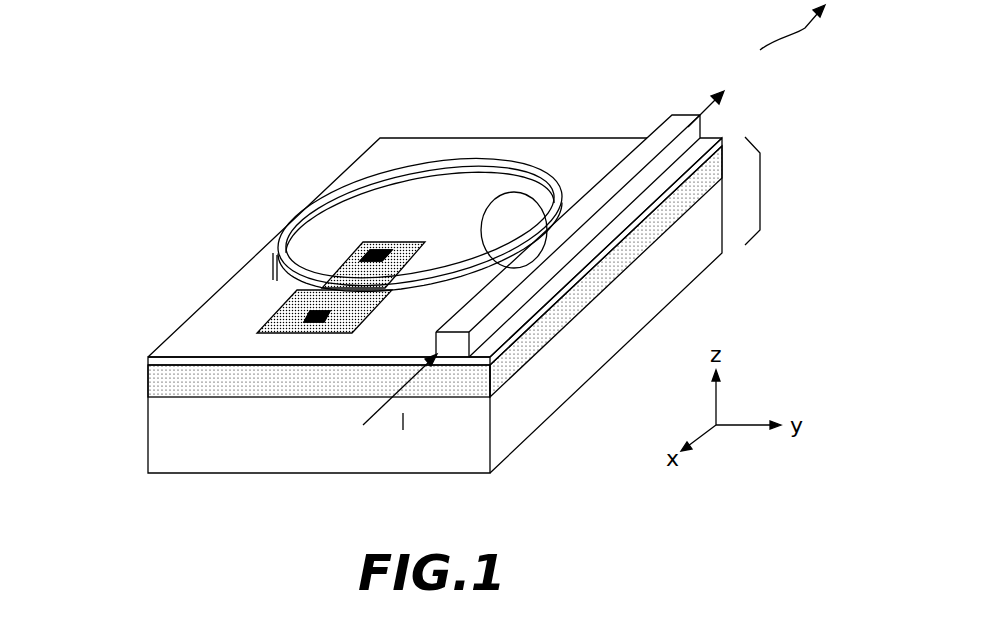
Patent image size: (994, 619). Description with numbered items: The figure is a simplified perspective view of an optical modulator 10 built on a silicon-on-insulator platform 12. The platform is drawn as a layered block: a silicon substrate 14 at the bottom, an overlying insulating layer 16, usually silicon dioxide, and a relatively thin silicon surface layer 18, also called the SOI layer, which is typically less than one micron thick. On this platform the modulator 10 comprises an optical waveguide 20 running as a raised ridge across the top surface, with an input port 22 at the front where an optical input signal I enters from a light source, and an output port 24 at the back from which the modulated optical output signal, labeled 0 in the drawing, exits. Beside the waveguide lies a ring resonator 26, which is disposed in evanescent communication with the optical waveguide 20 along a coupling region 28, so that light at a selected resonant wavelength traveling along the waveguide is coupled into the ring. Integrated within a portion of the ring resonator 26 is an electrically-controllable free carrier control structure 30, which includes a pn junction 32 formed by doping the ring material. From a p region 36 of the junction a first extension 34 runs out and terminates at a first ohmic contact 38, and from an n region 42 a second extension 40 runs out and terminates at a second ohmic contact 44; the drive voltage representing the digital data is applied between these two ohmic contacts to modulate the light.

The optical modulator 10 is at (222, 163).
The silicon-on-insulator (SOI) platform 12 is at (762, 188).
The silicon substrate 14 is at (147, 440).
The insulating layer 16 is at (147, 380).
The silicon surface layer 18 is at (147, 357).
The optical waveguide 20 is at (610, 192).
The input port 22 is at (452, 343).
The output port 24 is at (688, 115).
The ring resonator 26 is at (488, 150).
The coupling region 28 is at (545, 240).
The free carrier control structure 30 is at (250, 292).
The pn junction 32 is at (265, 282).
The first extension 34 is at (390, 250).
The p region 36 is at (393, 266).
The first ohmic contact 38 is at (374, 250).
The second extension 40 is at (320, 310).
The n region 42 is at (265, 295).
The second ohmic contact 44 is at (322, 300).
The reference direction 0 is at (800, 27).